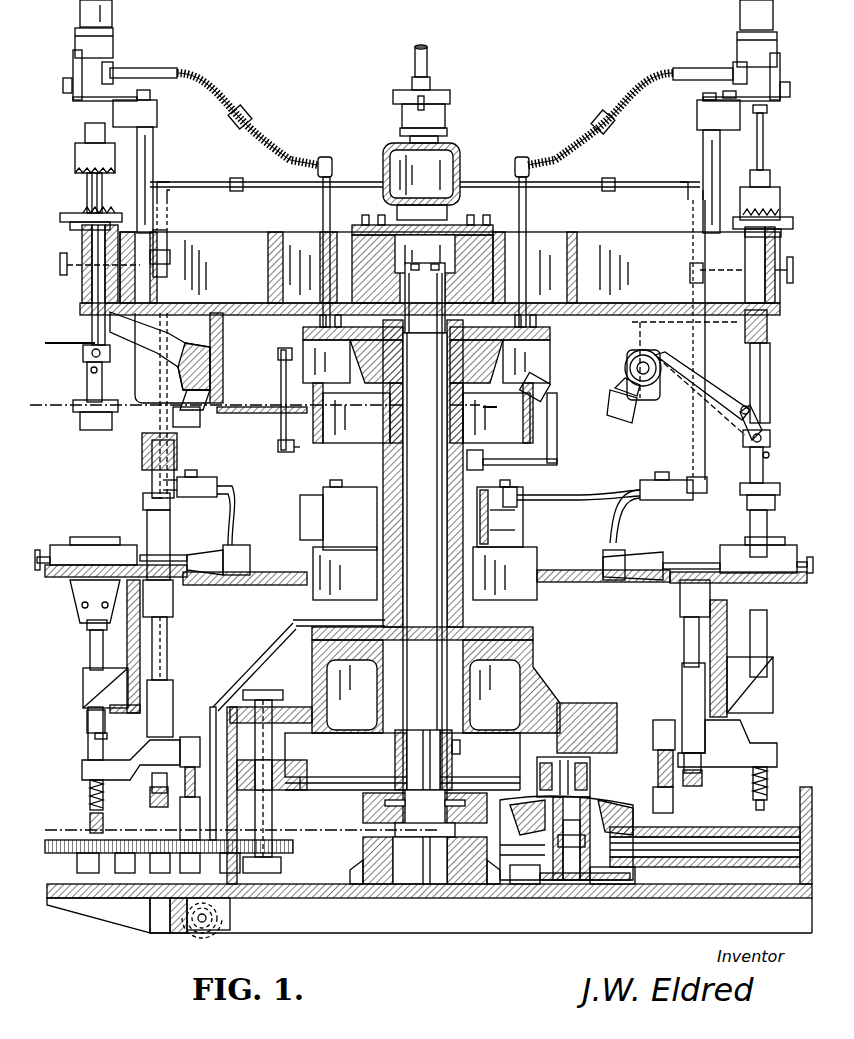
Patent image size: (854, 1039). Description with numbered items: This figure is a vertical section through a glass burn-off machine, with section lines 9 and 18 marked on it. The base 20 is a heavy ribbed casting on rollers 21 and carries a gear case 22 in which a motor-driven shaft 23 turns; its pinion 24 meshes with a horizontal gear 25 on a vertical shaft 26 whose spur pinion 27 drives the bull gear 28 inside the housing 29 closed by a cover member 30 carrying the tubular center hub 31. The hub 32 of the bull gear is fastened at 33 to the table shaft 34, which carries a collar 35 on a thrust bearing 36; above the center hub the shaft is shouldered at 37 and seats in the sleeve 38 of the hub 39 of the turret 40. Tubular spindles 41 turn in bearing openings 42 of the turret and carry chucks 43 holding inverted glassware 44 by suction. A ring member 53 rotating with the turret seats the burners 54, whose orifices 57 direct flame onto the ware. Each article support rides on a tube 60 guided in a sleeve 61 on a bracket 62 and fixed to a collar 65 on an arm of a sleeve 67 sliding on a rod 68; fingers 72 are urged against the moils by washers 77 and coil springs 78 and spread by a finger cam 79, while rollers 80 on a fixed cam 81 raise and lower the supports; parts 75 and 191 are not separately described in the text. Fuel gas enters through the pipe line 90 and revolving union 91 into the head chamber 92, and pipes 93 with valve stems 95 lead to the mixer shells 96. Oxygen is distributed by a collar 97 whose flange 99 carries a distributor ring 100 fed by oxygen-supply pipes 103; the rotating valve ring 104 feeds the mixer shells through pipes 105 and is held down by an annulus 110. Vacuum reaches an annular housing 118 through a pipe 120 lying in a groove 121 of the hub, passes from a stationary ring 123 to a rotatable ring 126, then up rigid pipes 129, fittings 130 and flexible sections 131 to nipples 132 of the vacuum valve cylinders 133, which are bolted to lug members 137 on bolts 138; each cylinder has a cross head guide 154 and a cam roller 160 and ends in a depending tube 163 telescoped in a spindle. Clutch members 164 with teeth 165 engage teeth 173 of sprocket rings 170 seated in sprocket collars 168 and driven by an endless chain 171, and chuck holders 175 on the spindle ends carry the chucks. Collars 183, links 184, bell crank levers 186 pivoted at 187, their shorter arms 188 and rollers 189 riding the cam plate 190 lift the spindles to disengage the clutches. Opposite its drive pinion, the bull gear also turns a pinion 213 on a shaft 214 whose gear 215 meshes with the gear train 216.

The section line 9- 9 is at (269, 376).
The rack 18 is at (235, 823).
The base 20 is at (315, 910).
The rollers 21 is at (210, 932).
The gear case 22 is at (610, 815).
The shaft 23 is at (720, 870).
The pinion 24 is at (620, 872).
The horizontal gear 25 is at (535, 870).
The shaft 26 is at (560, 840).
The spur-toothed pinion 27 is at (562, 762).
The bull gear 28 is at (490, 770).
The housing 29 is at (615, 725).
The cover member 30 is at (550, 705).
The center hub 31 is at (520, 525).
The hub 32 is at (395, 746).
The fastening 33 is at (460, 745).
The table shaft 34 is at (405, 685).
The collar 35 is at (380, 795).
The thrust bearing 36 is at (365, 852).
The annular shoulder 37 is at (427, 385).
The sleeve 38 is at (410, 342).
The hub 39 is at (447, 288).
The spindle table or turret 40 is at (237, 298).
The tubular spindles 41 is at (82, 278).
The bearing openings 42 is at (82, 238).
The chucks 43 is at (80, 418).
The article of glassware 44 is at (750, 525).
The ring member 53 is at (173, 598).
The gaseous fuel burners 54 is at (790, 540).
The restricted orifices 57 is at (92, 537).
The tube 60 is at (90, 650).
The sleeves 61 is at (95, 680).
The brackets 62 is at (100, 695).
The collar 65 is at (82, 768).
The sleeve 67 is at (173, 690).
The vertical rod 68 is at (167, 650).
The fingers 72 is at (82, 605).
The collar 75 is at (87, 628).
The washers 77 is at (103, 800).
The coil springs 78 is at (753, 780).
The finger cam 79 is at (90, 822).
The rollers 80 is at (190, 737).
The fixed cam 81 is at (658, 770).
The pipe line 90 is at (428, 60).
The revolving joint or union 91 is at (447, 100).
The head chamber 92 is at (448, 160).
The gas-conducting pipes 93 is at (426, 194).
The operating stems 95 is at (40, 550).
The mixer shells 96 is at (120, 548).
The collar 97 is at (205, 552).
The horizontal flange 99 is at (537, 550).
The distributor ring 100 is at (523, 518).
The oxygen-supply pipes 103 is at (300, 530).
The rotating valve ring 104 is at (345, 495).
The oxygen-conducting pipes 105 is at (300, 498).
The annulus 110 is at (515, 482).
The annular housing 118 is at (280, 385).
The vacuum-establishing pipe 120 is at (548, 385).
The groove 121 is at (484, 462).
The stationary ring 123 is at (540, 355).
The rotatable ring 126 is at (545, 333).
The upright rigid pipes 129 is at (327, 222).
The fittings 130 is at (326, 160).
The flexible pipe sections 131 is at (225, 95).
The threaded nipples 132 is at (145, 68).
The vacuum valve cylinders 133 is at (120, 42).
The lug members 137 is at (150, 113).
The vertical bolts 138 is at (150, 155).
The cross head guide 154 is at (73, 66).
The roller 160 is at (63, 88).
The depending tubes 163 is at (764, 152).
The clutch members 164 is at (75, 158).
The clutch teeth 165 is at (107, 186).
The sprocket collar 168 is at (83, 210).
The sprocket rings 170 is at (115, 222).
The endless chain 171 is at (60, 217).
The clutch teeth 173 is at (108, 222).
The chuck holder 175 is at (87, 385).
The collars 183 is at (83, 358).
The links 184 is at (760, 425).
The bell crank levers 186 is at (212, 370).
The pivot 187 is at (650, 362).
The shorter arms 188 is at (612, 398).
The rollers 189 is at (185, 427).
The cam plate 190 is at (250, 445).
The hose 191 is at (235, 465).
The pinion 213 is at (285, 768).
The shaft 214 is at (262, 812).
The gear 215 is at (270, 855).
The train of gears 216 is at (135, 896).